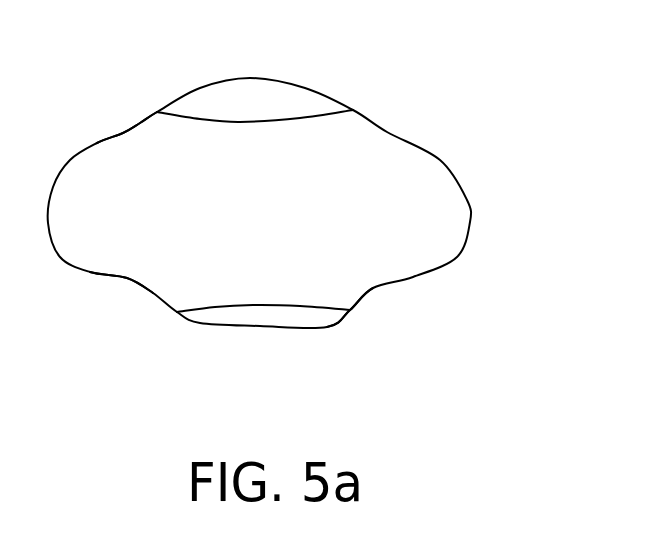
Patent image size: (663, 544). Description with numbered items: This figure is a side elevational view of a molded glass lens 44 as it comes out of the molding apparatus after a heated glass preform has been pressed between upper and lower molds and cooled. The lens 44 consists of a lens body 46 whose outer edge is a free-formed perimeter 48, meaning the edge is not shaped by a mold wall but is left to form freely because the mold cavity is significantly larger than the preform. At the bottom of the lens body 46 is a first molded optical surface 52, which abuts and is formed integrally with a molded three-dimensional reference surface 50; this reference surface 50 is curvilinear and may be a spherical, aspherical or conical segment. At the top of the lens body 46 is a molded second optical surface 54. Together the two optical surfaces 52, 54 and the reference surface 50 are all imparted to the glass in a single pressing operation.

The molded glass lens 44 is at (480, 167).
The lens body 46 is at (137, 255).
The free-formed perimeter 48 is at (127, 134).
The molded three-dimensional reference surface 50 is at (345, 315).
The first molded optical surface 52 is at (257, 327).
The molded second optical surface 54 is at (280, 78).